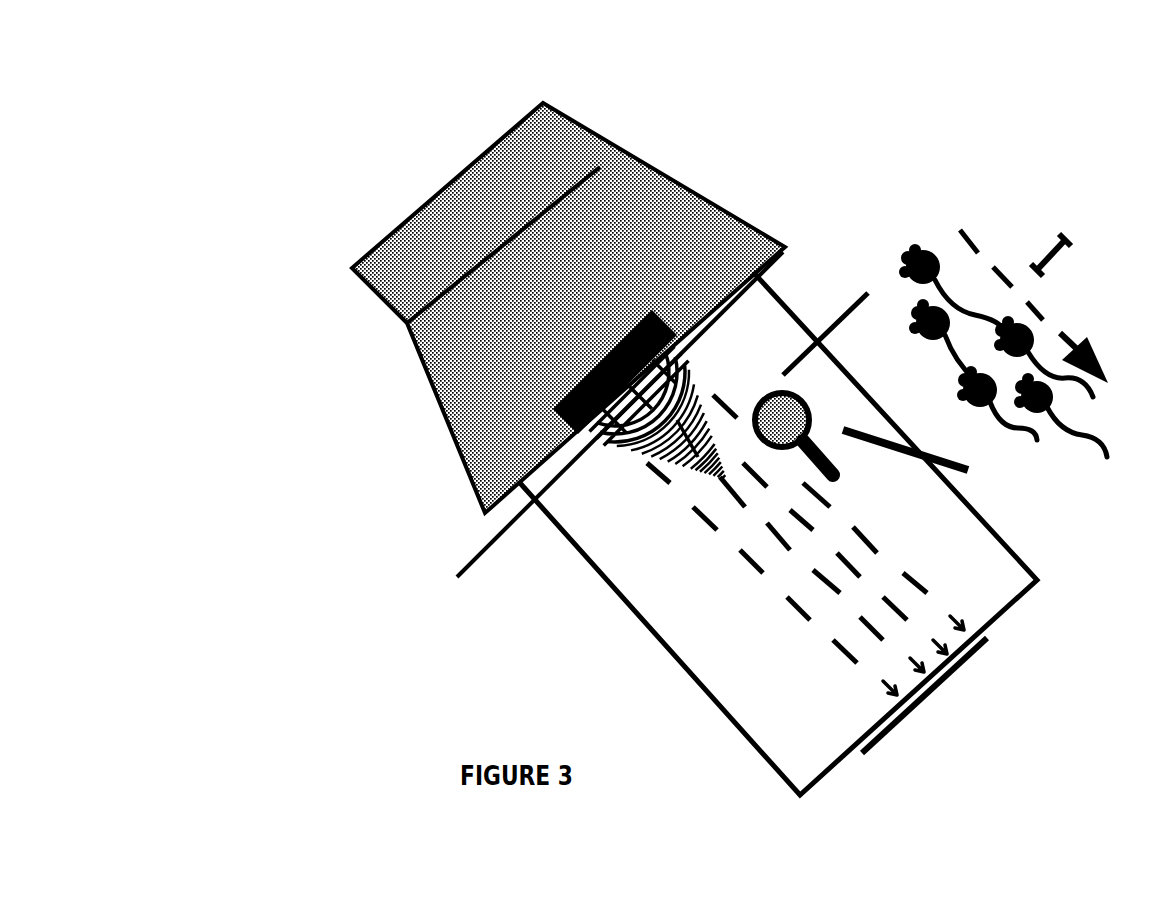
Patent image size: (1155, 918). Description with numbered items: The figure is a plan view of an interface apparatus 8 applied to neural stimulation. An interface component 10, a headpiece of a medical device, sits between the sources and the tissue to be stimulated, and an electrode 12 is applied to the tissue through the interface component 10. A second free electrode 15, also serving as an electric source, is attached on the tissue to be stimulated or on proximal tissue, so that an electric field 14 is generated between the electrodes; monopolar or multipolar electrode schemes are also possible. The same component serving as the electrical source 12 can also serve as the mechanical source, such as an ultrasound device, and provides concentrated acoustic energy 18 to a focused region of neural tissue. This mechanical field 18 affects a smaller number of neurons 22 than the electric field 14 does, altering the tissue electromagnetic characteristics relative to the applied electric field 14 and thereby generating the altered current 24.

The interface apparatus 8 is at (228, 218).
The interface component 10 is at (541, 308).
The electrode 12 is at (621, 392).
The electric field 14 is at (778, 533).
The second free electrode 15 is at (929, 695).
The concentrated acoustic energy 18 is at (577, 448).
The neurons 22 is at (942, 418).
The altered current 24 is at (1003, 305).